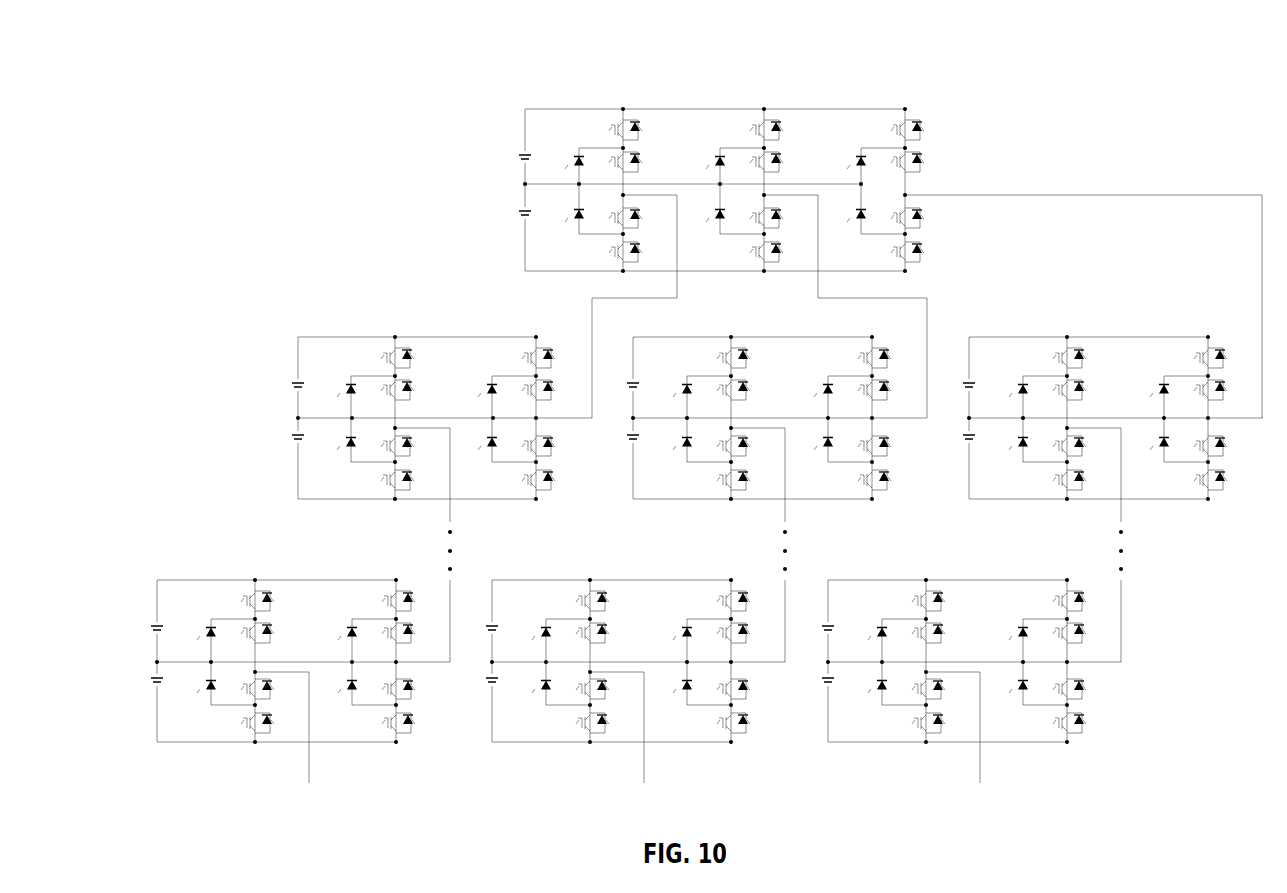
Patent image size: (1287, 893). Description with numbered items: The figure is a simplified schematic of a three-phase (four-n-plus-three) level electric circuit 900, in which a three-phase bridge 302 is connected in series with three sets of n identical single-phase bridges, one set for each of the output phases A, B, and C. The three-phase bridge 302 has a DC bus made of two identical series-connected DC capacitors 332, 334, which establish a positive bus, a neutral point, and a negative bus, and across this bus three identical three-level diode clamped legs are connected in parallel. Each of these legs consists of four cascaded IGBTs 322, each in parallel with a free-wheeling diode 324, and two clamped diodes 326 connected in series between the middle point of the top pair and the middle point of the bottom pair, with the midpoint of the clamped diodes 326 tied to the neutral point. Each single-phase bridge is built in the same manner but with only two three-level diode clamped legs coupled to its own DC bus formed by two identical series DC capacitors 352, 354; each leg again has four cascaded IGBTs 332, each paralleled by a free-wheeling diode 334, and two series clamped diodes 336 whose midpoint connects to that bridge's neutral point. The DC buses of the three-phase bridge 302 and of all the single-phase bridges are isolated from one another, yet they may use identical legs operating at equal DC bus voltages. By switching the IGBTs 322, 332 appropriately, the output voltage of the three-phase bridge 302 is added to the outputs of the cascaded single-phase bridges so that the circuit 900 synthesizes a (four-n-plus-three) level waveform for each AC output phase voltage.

The 3-phase (4n+3) level electric circuit 900 is at (808, 65).
The 3-phase bridge 302 is at (733, 105).
The IGBT 322 is at (749, 190).
The free-wheeling diode 324 is at (784, 192).
The clamped diode 326 is at (730, 191).
The IGBT 332 is at (523, 157).
The free-wheeling diode 334 is at (523, 212).
The clamped diode 336 is at (697, 540).
The DC capacitor 352 is at (294, 383).
The DC capacitor 354 is at (294, 437).